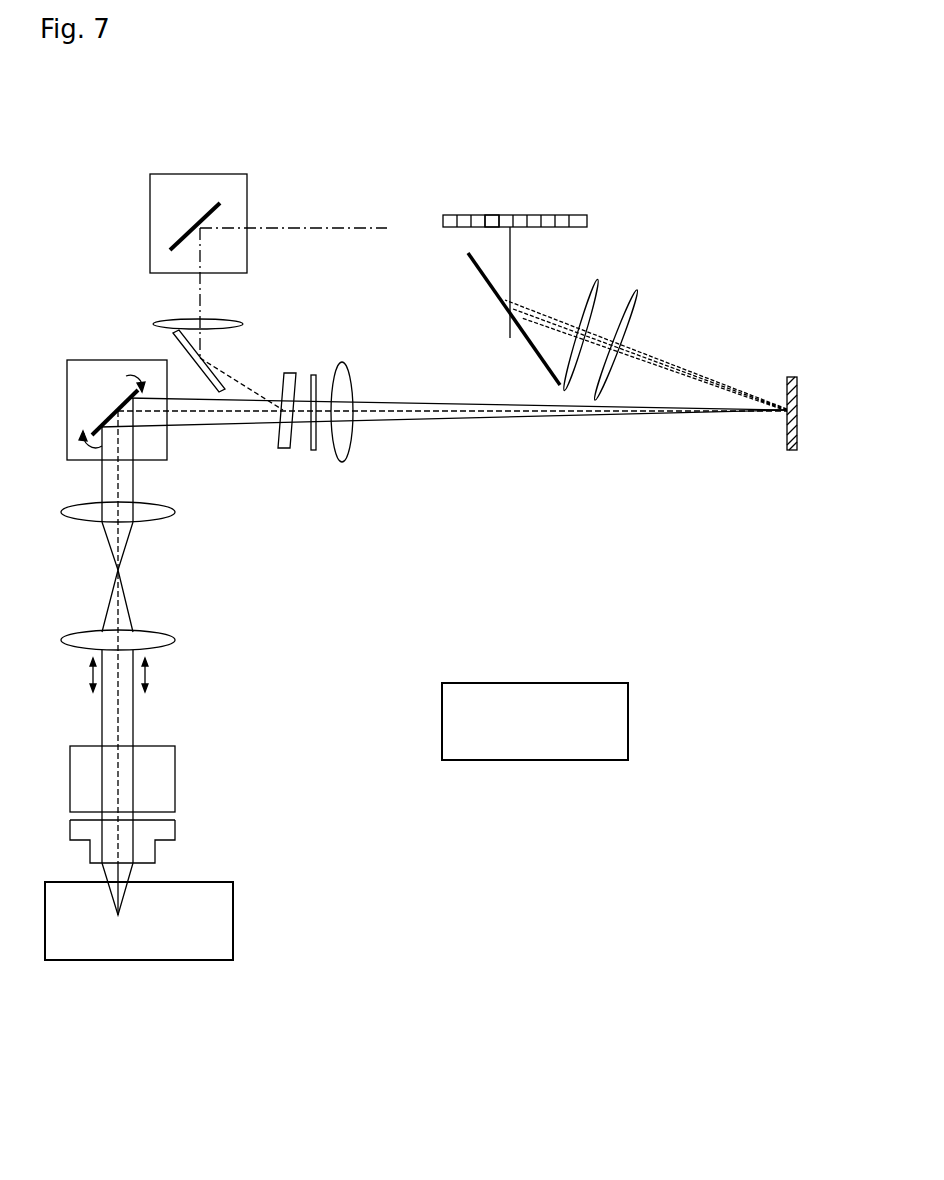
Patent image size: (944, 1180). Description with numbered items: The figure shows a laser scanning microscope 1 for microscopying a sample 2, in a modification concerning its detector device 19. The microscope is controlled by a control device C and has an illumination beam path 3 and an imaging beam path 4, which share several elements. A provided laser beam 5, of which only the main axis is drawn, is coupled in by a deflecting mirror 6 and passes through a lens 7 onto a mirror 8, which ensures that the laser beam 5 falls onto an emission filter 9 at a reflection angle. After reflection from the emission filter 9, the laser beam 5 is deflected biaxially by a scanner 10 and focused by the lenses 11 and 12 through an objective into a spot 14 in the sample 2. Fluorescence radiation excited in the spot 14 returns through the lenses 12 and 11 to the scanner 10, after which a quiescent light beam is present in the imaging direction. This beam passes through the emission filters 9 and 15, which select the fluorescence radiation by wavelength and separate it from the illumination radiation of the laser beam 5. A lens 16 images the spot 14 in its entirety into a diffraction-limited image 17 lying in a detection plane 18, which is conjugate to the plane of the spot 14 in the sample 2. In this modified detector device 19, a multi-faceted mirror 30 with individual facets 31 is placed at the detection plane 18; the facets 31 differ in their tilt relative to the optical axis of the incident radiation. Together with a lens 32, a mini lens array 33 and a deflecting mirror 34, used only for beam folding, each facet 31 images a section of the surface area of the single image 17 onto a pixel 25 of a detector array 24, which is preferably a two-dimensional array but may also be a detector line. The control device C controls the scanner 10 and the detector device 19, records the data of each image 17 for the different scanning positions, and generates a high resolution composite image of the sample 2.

The laser scanning microscope 1 is at (484, 929).
The sample 2 is at (212, 950).
The illumination beam path 3 is at (95, 276).
The imaging beam path 4 is at (445, 584).
The laser beam 5 is at (366, 228).
The deflecting mirror 6 is at (210, 174).
The lens 7 is at (222, 323).
The mirror 8 is at (167, 339).
The emission filter 9 is at (283, 450).
The scanner 10 is at (155, 520).
The lens 11 is at (160, 648).
The lens 12 is at (178, 765).
The spot 14 is at (120, 918).
The emission filter 15 is at (296, 372).
The lens 16 is at (342, 362).
The image 17 is at (787, 427).
The detection plane 18 is at (790, 455).
The detector device 19 is at (706, 175).
The detector array 24 is at (538, 215).
The pixel 25 is at (490, 215).
The multi-faceted mirror 30 is at (788, 378).
The facet 31 is at (787, 395).
The lens 32 is at (637, 291).
The mini lens array 33 is at (600, 279).
The deflecting mirror 34 is at (512, 310).
The control device C is at (610, 750).